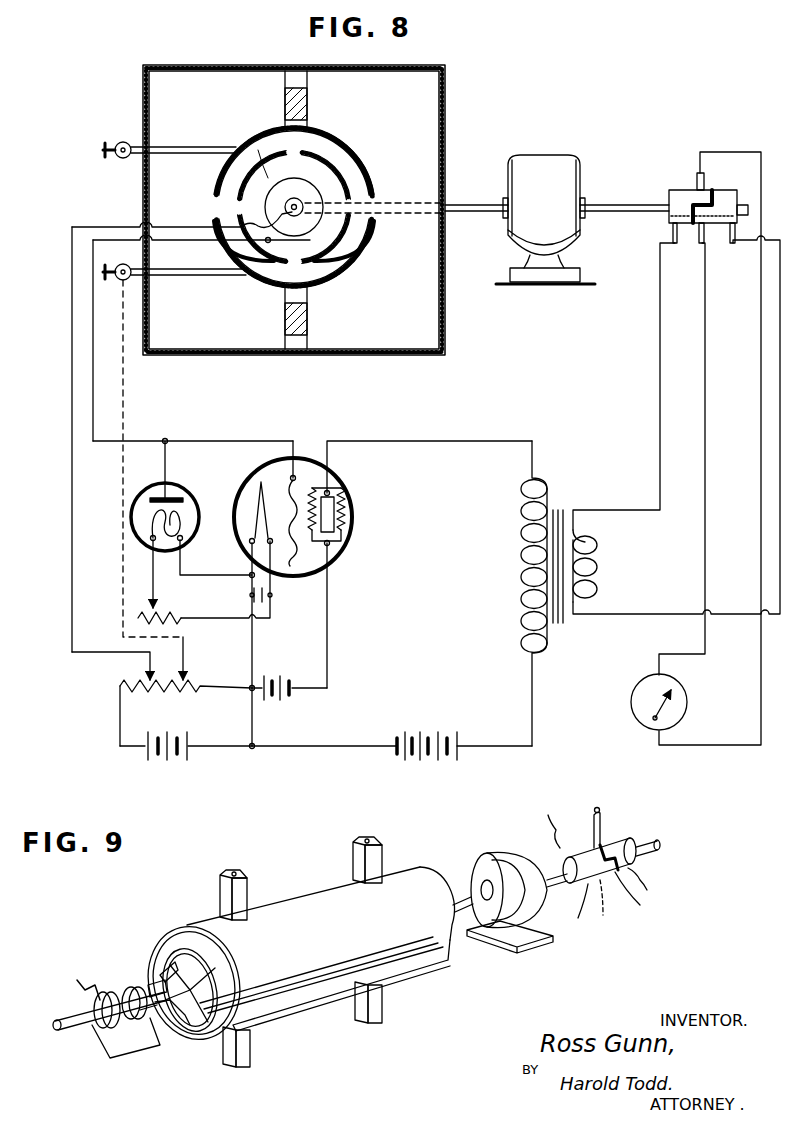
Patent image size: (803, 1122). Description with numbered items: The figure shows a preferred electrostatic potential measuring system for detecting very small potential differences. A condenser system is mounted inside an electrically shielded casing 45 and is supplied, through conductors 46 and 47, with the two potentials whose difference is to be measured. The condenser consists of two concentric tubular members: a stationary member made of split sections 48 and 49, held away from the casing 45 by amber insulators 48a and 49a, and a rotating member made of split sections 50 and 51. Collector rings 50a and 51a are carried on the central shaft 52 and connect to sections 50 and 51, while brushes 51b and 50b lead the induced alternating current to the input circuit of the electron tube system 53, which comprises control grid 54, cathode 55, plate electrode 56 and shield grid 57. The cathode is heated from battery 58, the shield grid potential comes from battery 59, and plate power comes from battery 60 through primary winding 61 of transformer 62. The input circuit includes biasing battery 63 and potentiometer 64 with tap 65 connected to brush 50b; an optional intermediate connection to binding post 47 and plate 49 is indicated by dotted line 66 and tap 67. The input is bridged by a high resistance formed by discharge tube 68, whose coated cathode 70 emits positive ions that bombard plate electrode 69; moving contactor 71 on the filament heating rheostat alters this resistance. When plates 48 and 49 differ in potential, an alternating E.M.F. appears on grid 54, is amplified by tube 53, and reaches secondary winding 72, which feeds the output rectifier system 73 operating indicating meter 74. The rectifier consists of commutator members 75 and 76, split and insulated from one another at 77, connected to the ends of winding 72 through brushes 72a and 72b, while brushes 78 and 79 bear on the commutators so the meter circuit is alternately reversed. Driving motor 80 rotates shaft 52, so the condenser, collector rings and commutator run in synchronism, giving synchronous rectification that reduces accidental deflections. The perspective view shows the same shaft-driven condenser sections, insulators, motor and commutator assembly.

In FIG. 8, the electrically shielded casing 45 is at (447, 328).
In FIG. 8, the conductor 46 is at (123, 142).
In FIG. 8, the conductor 47 is at (123, 280).
In FIG. 8, the split section 48 is at (358, 166).
In FIG. 9, the split section 48 is at (296, 958).
In FIG. 8, the insulator 48a is at (309, 109).
In FIG. 9, the insulator 48a is at (358, 868).
In FIG. 8, the split section 49 is at (373, 233).
In FIG. 8, the insulator 49a is at (290, 318).
In FIG. 9, the insulator 49a is at (372, 1012).
In FIG. 8, the split section 50 is at (250, 160).
In FIG. 9, the split section 50 is at (172, 962).
In FIG. 8, the collector ring 50a is at (262, 150).
In FIG. 9, the collector ring 50a is at (148, 985).
In FIG. 8, the brush 50b is at (240, 214).
In FIG. 9, the brush 50b is at (158, 1020).
In FIG. 8, the split section 51 is at (328, 284).
In FIG. 9, the split section 51 is at (222, 966).
In FIG. 8, the collector ring 51a is at (364, 252).
In FIG. 9, the collector ring 51a is at (97, 1003).
In FIG. 8, the brush 51b is at (265, 270).
In FIG. 9, the brush 51b is at (92, 982).
In FIG. 8, the central shaft 52 is at (298, 204).
In FIG. 9, the central shaft 52 is at (93, 1030).
In FIG. 8, the electron tube system 53 is at (290, 458).
In FIG. 8, the control grid 54 is at (285, 472).
In FIG. 8, the cathode 55 is at (258, 520).
In FIG. 8, the plate electrode 56 is at (333, 500).
In FIG. 8, the shield grid 57 is at (343, 515).
In FIG. 8, the battery 58 is at (274, 600).
In FIG. 8, the battery 59 is at (277, 700).
In FIG. 8, the battery 60 is at (427, 730).
In FIG. 8, the primary winding 61 is at (520, 583).
In FIG. 8, the transformer 62 is at (562, 500).
In FIG. 8, the biasing battery 63 is at (168, 735).
In FIG. 8, the potentiometer 64 is at (188, 682).
In FIG. 8, the tap 65 is at (148, 680).
In FIG. 8, the dotted line 66 is at (120, 565).
In FIG. 8, the tap 67 is at (190, 665).
In FIG. 8, the discharge tube 68 is at (131, 520).
In FIG. 8, the plate electrode 69 is at (176, 498).
In FIG. 8, the cathode 70 is at (172, 522).
In FIG. 8, the contactor 71 is at (165, 612).
In FIG. 8, the secondary winding 72 is at (600, 566).
In FIG. 9, the brush 72a is at (618, 833).
In FIG. 8, the brush 72b is at (740, 250).
In FIG. 8, the output rectifier system 73 is at (690, 200).
In FIG. 9, the output rectifier system 73 is at (612, 832).
In FIG. 8, the indicating meter 74 is at (690, 702).
In FIG. 8, the commutator member 75 is at (672, 218).
In FIG. 9, the commutator member 75 is at (583, 918).
In FIG. 8, the commutator member 76 is at (722, 196).
In FIG. 9, the commutator member 76 is at (640, 845).
In FIG. 8, the insulation 77 is at (676, 244).
In FIG. 9, the insulation 77 is at (640, 905).
In FIG. 8, the brush 78 is at (700, 250).
In FIG. 9, the brush 78 is at (603, 918).
In FIG. 8, the brush 79 is at (700, 170).
In FIG. 9, the brush 79 is at (597, 840).
In FIG. 8, the driving motor 80 is at (541, 165).
In FIG. 9, the driving motor 80 is at (508, 862).